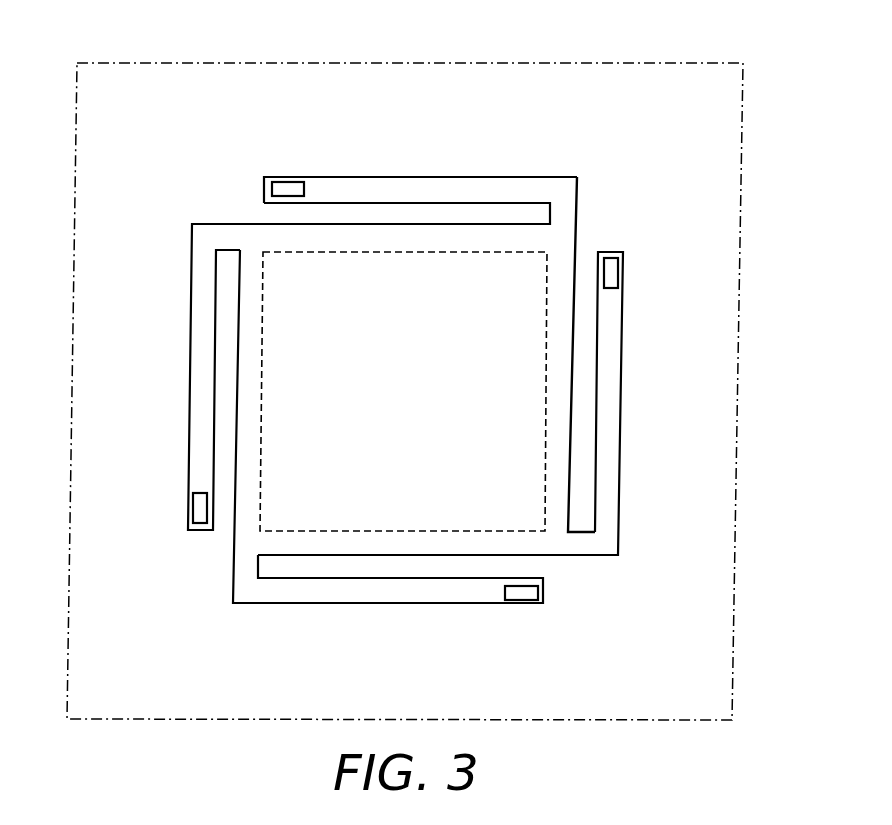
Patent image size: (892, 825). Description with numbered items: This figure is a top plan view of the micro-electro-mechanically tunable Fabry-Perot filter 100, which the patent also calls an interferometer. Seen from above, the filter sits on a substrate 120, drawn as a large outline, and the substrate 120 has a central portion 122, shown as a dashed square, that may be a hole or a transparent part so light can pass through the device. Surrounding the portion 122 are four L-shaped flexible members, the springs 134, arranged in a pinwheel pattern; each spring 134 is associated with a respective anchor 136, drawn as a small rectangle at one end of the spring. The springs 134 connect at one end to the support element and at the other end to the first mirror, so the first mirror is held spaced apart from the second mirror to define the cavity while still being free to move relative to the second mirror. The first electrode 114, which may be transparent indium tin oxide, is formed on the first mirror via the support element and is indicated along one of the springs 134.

The Fabry-Perot filter 100 is at (196, 158).
The first electrode 114 is at (577, 238).
The substrate 120 is at (745, 120).
The portion 122 is at (428, 401).
The springs 134 is at (425, 190).
The anchor 136 is at (290, 186).